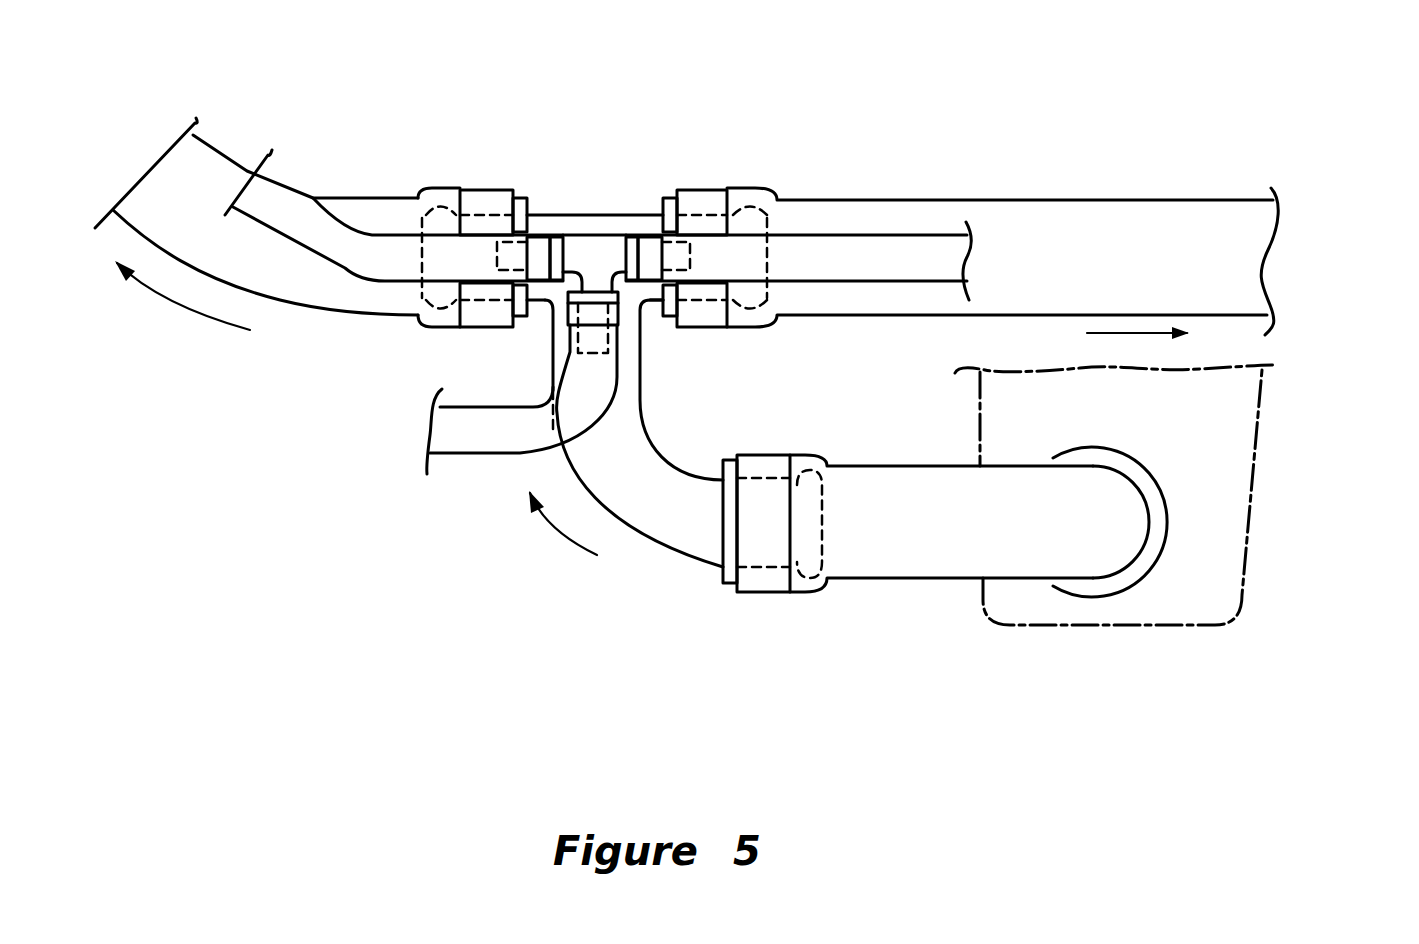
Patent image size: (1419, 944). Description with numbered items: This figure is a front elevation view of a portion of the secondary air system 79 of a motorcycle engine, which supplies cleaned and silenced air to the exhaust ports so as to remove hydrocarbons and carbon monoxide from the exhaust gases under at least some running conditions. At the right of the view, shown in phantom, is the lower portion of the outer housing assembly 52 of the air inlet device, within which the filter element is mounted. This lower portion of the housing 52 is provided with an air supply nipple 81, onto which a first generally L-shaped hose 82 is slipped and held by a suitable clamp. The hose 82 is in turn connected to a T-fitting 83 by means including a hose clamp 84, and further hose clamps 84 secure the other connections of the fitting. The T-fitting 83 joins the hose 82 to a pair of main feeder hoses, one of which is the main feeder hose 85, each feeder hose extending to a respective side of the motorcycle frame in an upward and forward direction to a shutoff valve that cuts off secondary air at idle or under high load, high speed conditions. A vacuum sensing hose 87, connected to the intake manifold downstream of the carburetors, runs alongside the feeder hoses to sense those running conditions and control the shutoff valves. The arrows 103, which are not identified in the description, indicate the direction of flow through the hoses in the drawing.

The outer housing assembly 52 is at (1255, 483).
The secondary air system 79 is at (1131, 194).
The air supply nipple 81 is at (1145, 484).
The first generally L-shaped hose 82 is at (905, 568).
The T-fitting 83 is at (660, 443).
The hose clamp 84 is at (1221, 213).
The main feeder hose 85 is at (196, 159).
The vacuum sensing hose 87 is at (858, 247).
The flow direction arrows 103 is at (168, 303).